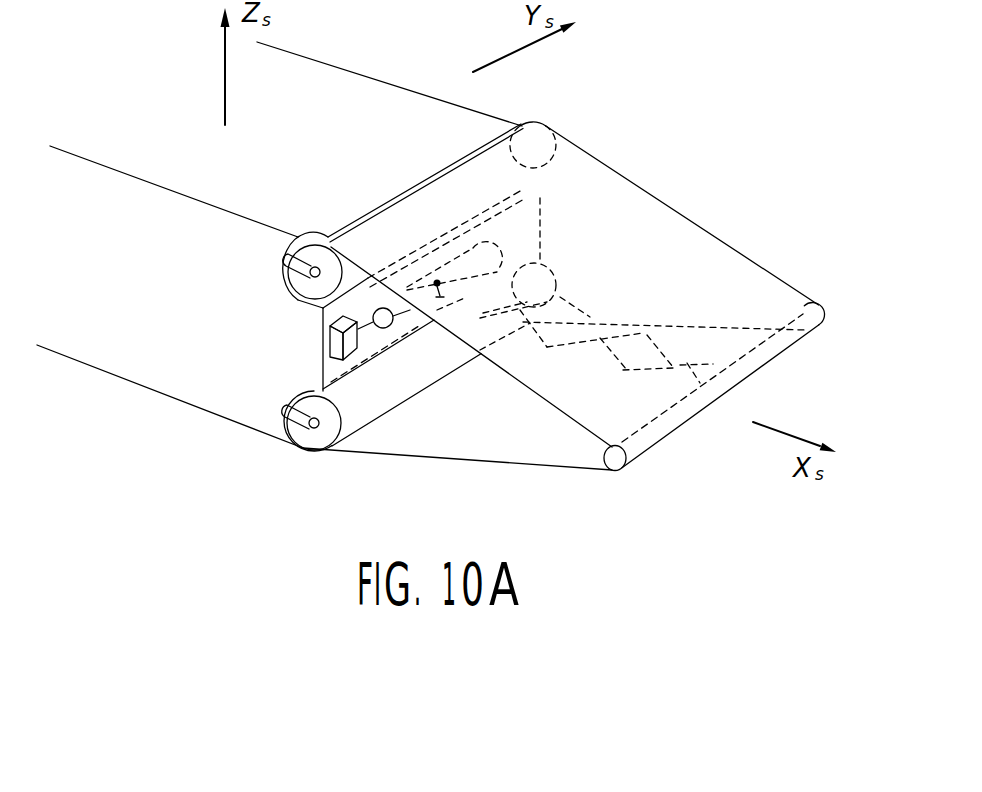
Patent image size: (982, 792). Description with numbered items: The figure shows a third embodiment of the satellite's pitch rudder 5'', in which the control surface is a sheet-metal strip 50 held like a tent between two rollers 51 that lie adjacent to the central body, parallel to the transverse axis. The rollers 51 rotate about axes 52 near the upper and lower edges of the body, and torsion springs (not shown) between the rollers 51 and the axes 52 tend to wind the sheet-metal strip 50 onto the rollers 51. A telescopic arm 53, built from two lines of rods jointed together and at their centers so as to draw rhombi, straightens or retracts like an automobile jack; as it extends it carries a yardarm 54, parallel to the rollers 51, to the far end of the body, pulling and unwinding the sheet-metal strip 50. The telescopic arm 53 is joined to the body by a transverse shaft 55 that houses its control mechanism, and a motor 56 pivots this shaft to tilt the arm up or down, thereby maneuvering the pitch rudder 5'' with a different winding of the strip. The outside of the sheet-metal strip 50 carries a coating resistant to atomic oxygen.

The pitch rudder 5'' is at (729, 138).
The sheet-metal strip 50 is at (742, 263).
The roller 51 is at (560, 190).
The axis 52 is at (302, 297).
The telescopic arm 53 is at (625, 335).
The yardarm 54 is at (620, 467).
The transverse shaft 55 is at (410, 316).
The motor 56 is at (331, 338).